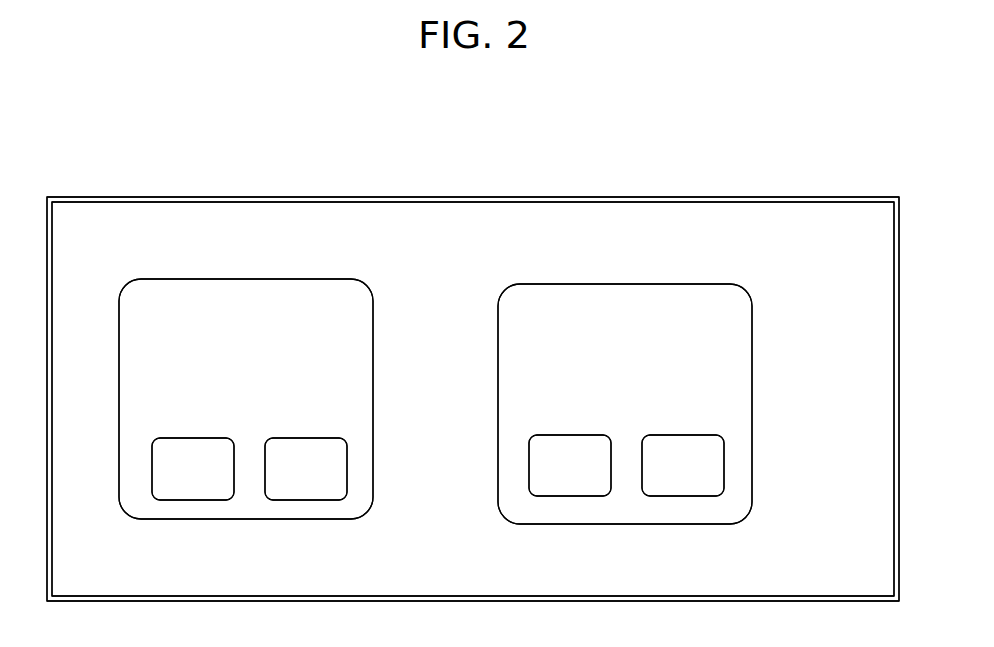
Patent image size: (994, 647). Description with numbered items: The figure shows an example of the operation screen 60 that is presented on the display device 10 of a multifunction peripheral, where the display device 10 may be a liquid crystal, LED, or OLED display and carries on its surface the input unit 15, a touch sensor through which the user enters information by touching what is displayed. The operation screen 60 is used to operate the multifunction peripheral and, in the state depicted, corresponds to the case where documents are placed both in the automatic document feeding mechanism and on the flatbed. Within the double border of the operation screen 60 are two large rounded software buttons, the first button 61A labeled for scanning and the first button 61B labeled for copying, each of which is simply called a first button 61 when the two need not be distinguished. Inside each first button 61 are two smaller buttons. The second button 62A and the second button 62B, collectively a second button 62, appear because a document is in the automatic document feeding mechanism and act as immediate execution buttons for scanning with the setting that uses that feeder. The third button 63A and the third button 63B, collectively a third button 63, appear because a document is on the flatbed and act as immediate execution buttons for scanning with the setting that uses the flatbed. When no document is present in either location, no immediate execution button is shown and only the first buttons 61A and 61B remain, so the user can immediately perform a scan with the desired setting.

The display device 10 is at (540, 135).
The input unit 15 is at (540, 135).
The operation screen 60 is at (688, 212).
The first button 61 is at (469, 401).
The first button 61A is at (373, 350).
The first button 61B is at (752, 340).
The second button 62 is at (387, 505).
The second button 62A is at (196, 491).
The second button 62B is at (567, 490).
The third button 63 is at (502, 505).
The third button 63A is at (309, 491).
The third button 63B is at (679, 490).